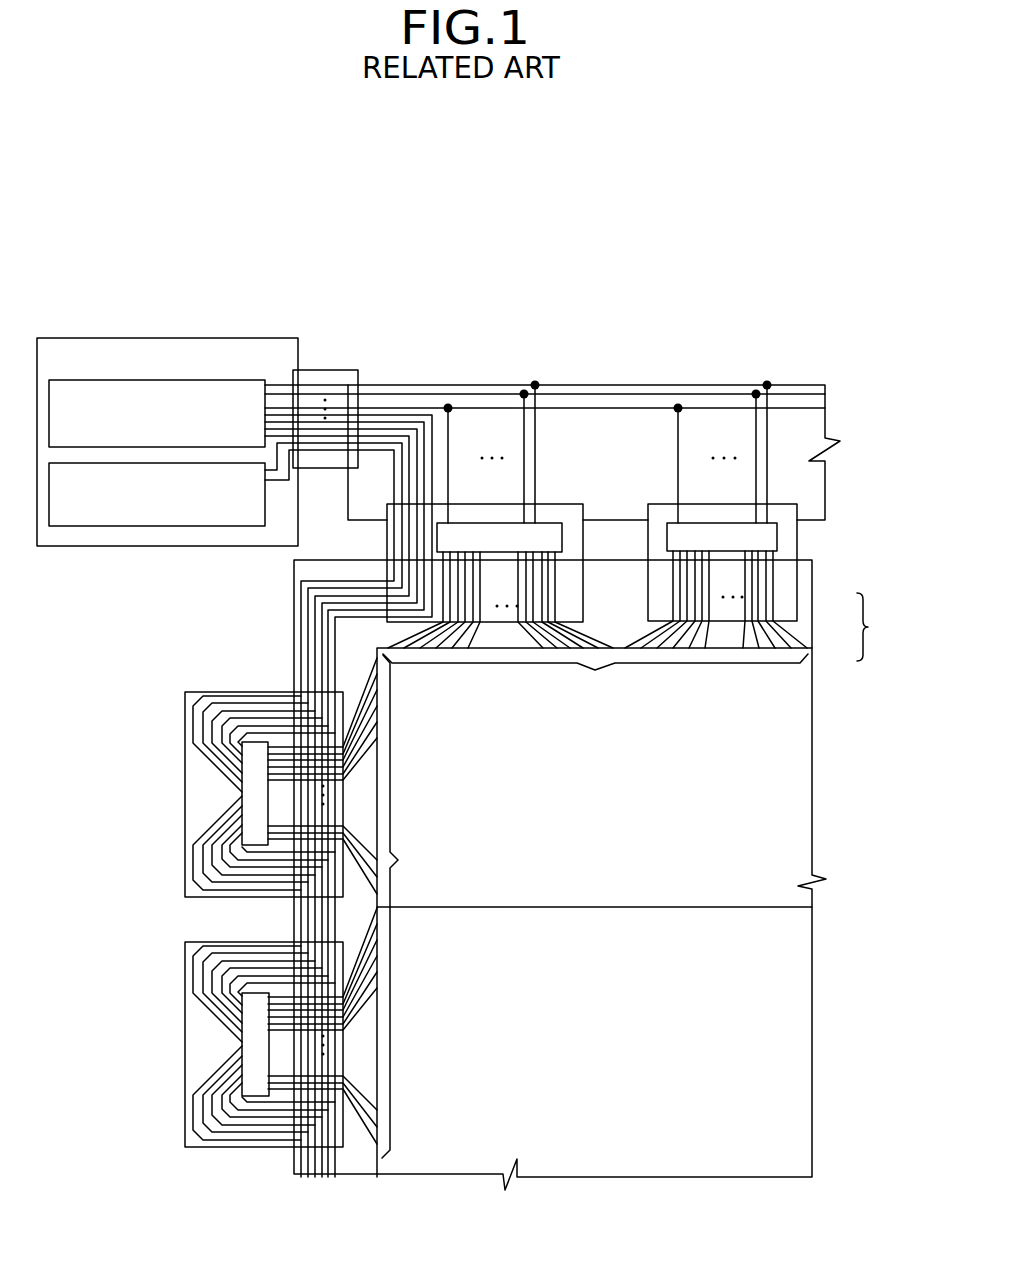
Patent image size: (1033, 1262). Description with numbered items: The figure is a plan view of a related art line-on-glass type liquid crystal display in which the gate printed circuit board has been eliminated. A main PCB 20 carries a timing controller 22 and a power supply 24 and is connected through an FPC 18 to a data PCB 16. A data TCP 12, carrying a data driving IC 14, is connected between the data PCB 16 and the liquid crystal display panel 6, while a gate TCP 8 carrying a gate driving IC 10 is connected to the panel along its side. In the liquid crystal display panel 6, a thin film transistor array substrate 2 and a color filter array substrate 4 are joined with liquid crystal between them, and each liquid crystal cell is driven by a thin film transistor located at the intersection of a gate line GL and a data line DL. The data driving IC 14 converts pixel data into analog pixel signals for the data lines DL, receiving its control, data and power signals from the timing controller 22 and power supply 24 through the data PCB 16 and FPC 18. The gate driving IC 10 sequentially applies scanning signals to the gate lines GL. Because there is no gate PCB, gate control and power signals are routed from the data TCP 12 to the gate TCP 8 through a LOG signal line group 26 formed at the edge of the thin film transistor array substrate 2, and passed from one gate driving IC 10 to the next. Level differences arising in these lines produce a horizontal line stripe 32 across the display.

The thin film transistor array substrate 2 is at (812, 600).
The color filter array substrate 4 is at (808, 657).
The liquid crystal display panel 6 is at (871, 627).
The gate TCP 8 is at (252, 690).
The gate driving IC 10 is at (255, 793).
The data TCP 12 is at (797, 525).
The data driving IC 14 is at (777, 545).
The data PCB 16 is at (748, 380).
The FPC 18 is at (356, 370).
The main PCB 20 is at (250, 338).
The timing controller 22 is at (207, 380).
The power supply 24 is at (215, 527).
The LOG signal line group 26 is at (351, 570).
The horizontal line stripe 32 is at (621, 906).
The data line DL is at (595, 679).
The gate line GL is at (410, 906).